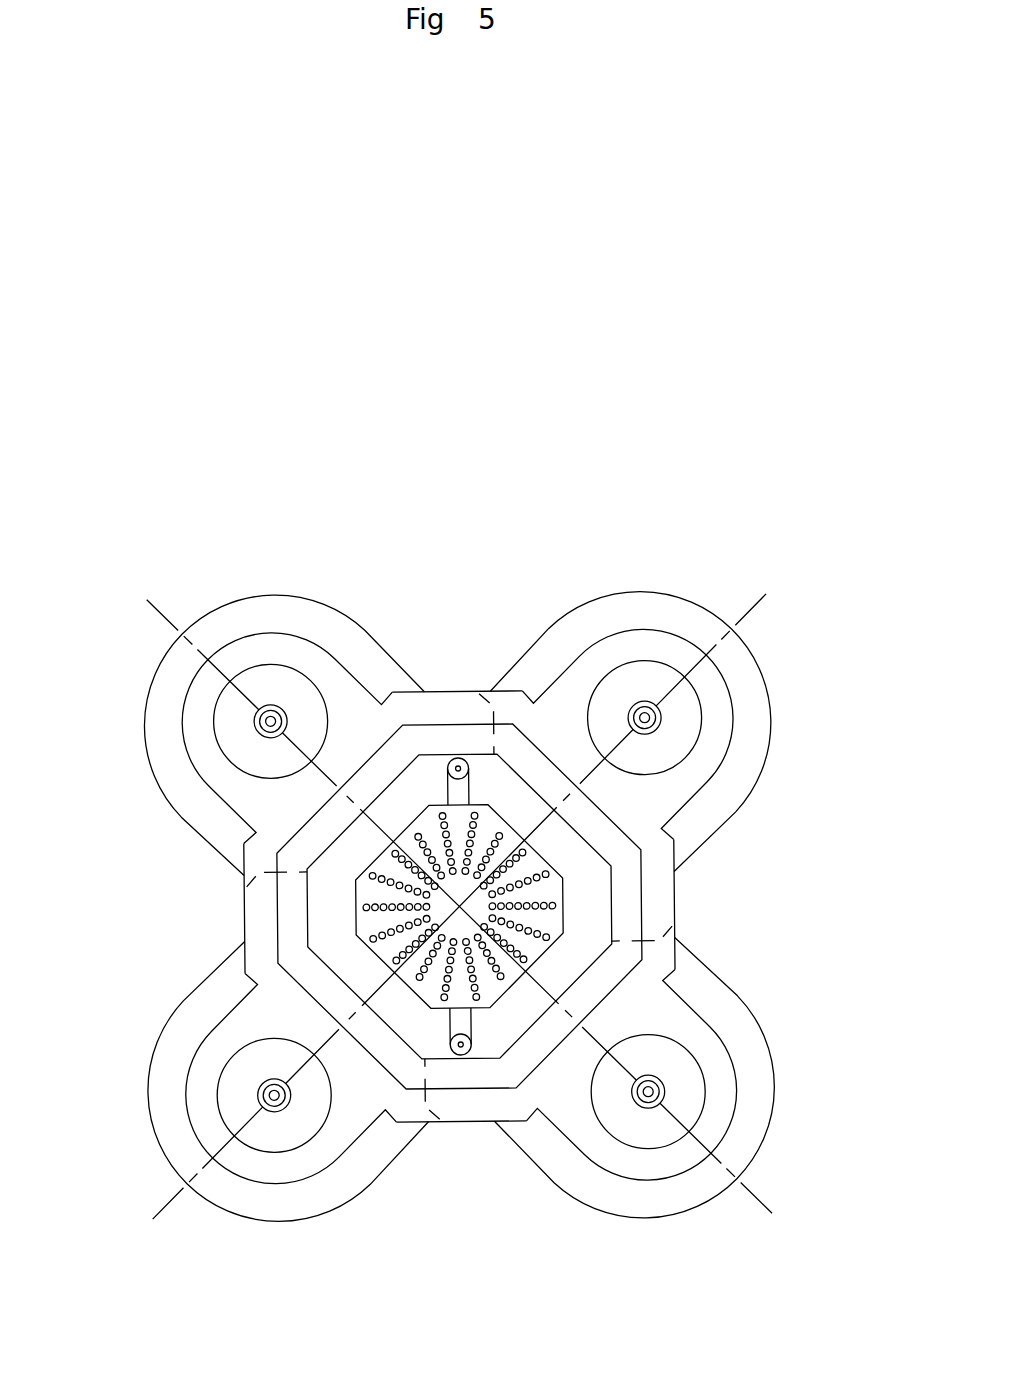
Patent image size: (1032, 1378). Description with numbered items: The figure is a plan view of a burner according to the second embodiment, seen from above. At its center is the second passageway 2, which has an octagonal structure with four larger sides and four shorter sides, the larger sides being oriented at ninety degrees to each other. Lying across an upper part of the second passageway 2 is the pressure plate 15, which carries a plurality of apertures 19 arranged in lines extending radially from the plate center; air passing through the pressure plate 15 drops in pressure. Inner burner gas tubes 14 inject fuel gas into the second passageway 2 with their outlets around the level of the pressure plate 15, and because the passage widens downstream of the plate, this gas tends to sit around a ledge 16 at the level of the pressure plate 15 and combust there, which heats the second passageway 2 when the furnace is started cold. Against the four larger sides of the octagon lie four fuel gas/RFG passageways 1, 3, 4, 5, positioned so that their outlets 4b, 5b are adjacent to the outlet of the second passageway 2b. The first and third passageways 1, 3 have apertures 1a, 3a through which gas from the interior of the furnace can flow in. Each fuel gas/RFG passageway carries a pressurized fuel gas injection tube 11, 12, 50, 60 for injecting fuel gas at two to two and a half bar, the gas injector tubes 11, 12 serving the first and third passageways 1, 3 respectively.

The first passageway 1 is at (183, 1042).
The aperture of first passageway 1a is at (282, 1133).
The second passageway 2 is at (665, 900).
The outlet of second passageway 2b is at (492, 1030).
The third passageway 3 is at (718, 1003).
The aperture of third passageway 3a is at (645, 1123).
The fuel gas/RFG passageway 4 is at (280, 610).
The outlet of fuel gas/RFG passageway 4b is at (257, 680).
The fuel gas/RFG passageway 5 is at (663, 607).
The outlet of fuel gas/RFG passageway 5b is at (652, 684).
The gas injector tube 11 is at (259, 1099).
The gas injector tube 12 is at (665, 1092).
The inner burner gas tubes 14 is at (456, 757).
The pressure plate 15 is at (486, 803).
The ledge 16 is at (627, 865).
The apertures 19 is at (363, 908).
The pressurized fuel gas injection tube 50 is at (253, 721).
The pressurized fuel gas injection tube 60 is at (663, 712).